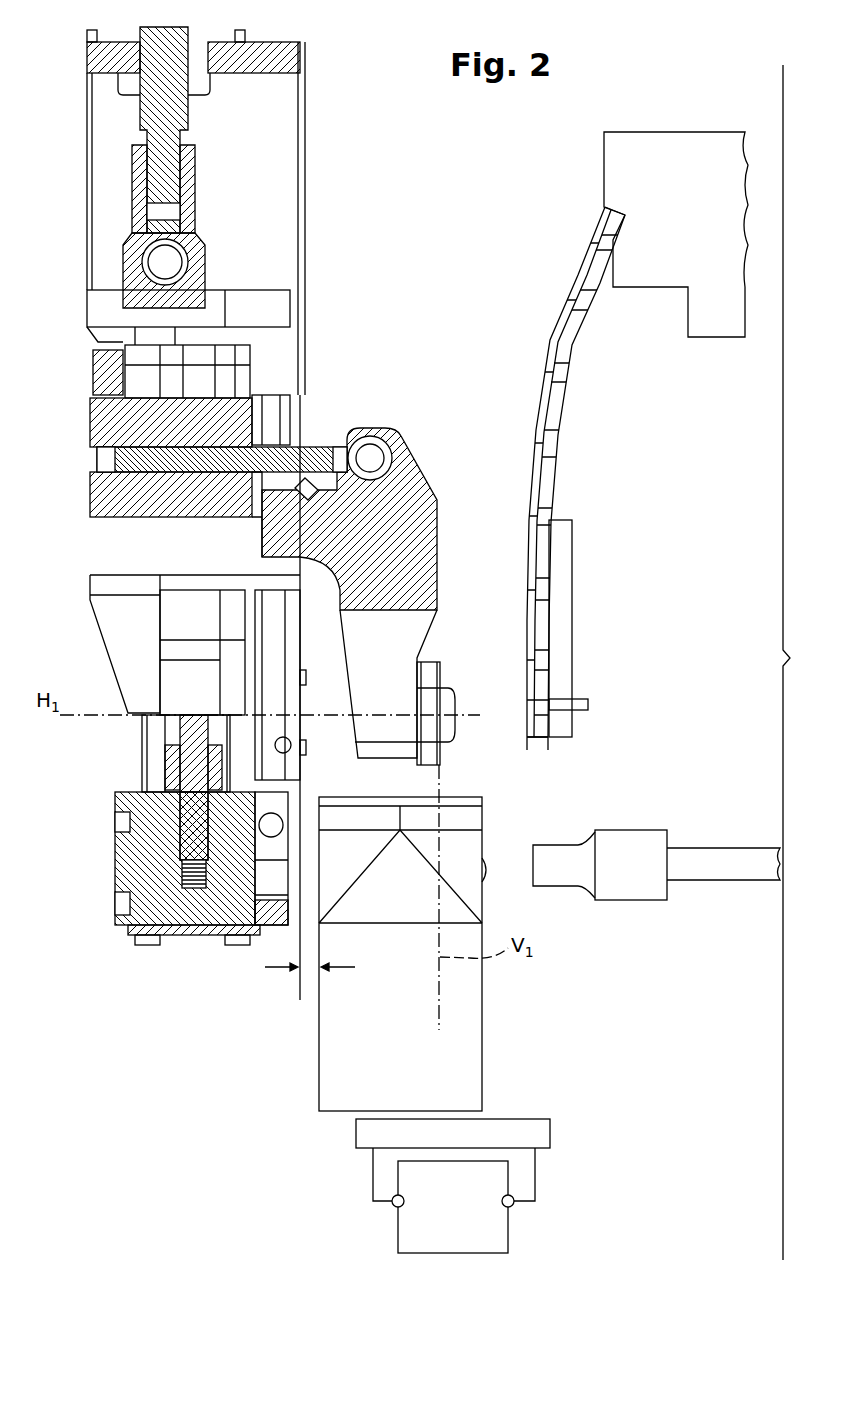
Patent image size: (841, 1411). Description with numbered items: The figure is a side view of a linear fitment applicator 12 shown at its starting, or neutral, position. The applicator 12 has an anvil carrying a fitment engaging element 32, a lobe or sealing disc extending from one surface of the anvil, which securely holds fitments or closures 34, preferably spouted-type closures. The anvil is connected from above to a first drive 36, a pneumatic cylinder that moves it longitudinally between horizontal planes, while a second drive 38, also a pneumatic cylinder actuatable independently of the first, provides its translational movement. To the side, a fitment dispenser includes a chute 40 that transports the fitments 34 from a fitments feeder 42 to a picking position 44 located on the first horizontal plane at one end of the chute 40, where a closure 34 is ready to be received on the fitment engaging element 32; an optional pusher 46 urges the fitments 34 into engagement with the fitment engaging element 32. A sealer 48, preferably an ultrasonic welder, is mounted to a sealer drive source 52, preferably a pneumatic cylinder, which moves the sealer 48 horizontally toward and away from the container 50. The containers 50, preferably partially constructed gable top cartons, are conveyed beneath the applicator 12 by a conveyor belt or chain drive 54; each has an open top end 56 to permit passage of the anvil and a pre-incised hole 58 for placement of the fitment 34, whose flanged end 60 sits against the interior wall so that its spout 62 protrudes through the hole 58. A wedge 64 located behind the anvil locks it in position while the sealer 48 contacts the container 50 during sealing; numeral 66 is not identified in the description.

The linear fitment applicator 12 is at (333, 343).
The fitment engaging element 32 is at (450, 700).
The fitments or closures 34 is at (550, 550).
The first drive 36 is at (185, 108).
The second drive 38 is at (98, 470).
The chute 40 is at (565, 370).
The fitments feeder 42 is at (608, 190).
The picking position 44 is at (522, 712).
The pusher 46 is at (580, 710).
The sealer 48 is at (623, 843).
The container 50 is at (470, 1017).
The sealer drive source 52 is at (708, 855).
The conveyor belt or chain drive 54 is at (530, 1122).
The open top end 56 is at (477, 838).
The pre-incised hole 58 is at (484, 868).
The flanged end 60 is at (570, 283).
The spout 62 is at (592, 278).
The wedge 64 is at (183, 848).
The strip direction 66 is at (548, 327).